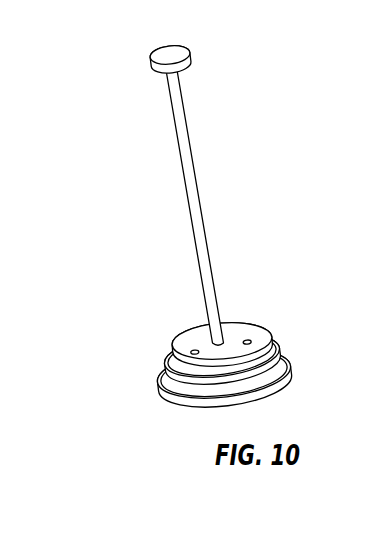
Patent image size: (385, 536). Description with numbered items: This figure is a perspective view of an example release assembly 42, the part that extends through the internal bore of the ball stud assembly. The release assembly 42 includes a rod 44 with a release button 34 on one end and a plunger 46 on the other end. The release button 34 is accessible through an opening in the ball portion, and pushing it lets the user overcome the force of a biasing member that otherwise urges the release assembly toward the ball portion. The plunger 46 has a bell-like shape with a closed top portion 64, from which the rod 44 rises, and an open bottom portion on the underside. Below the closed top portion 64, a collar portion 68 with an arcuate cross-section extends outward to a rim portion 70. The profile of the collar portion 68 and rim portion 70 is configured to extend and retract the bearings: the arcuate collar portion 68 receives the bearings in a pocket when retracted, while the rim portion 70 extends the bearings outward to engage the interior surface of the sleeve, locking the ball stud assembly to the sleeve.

The release assembly 42 is at (108, 273).
The release button 34 is at (177, 52).
The rod 44 is at (190, 168).
The closed top portion 64 is at (238, 325).
The collar portion 68 is at (280, 347).
The rim portion 70 is at (292, 367).
The plunger 46 is at (160, 388).